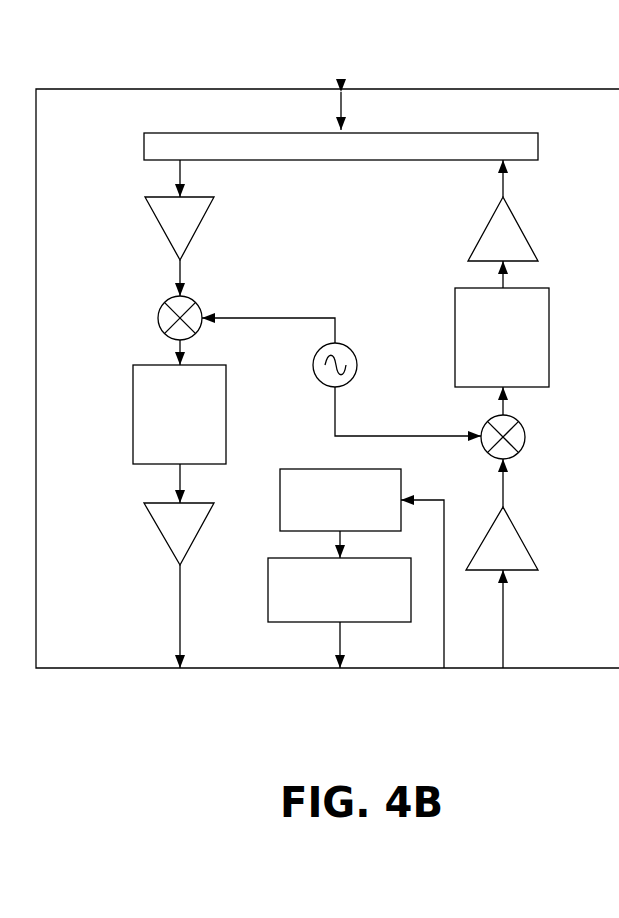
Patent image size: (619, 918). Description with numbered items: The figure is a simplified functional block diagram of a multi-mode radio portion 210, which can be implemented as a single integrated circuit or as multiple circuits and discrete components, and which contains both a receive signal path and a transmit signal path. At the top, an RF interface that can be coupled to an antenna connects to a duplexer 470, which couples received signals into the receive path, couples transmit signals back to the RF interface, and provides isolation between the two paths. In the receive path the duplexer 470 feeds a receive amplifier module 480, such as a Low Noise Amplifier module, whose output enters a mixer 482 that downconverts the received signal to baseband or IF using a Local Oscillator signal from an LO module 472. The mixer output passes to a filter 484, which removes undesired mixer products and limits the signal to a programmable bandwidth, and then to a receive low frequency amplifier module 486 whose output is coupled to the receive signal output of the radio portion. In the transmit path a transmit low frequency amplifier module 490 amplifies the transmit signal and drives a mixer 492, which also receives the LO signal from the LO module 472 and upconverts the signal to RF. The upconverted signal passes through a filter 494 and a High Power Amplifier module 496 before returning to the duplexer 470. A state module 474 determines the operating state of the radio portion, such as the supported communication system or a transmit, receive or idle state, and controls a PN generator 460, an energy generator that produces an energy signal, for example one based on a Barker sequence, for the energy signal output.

The multi-mode radio portion 210 is at (492, 89).
The duplexer 470 is at (160, 131).
The receive amplifier module 480 is at (165, 237).
The mixer 482 is at (156, 328).
The filter 484 is at (130, 423).
The receive low frequency amplifier module 486 is at (170, 560).
The LO module 472 is at (393, 358).
The High Power Amplifier module 496 is at (530, 242).
The filter 494 is at (557, 306).
The mixer 492 is at (520, 455).
The transmit low frequency amplifier module 490 is at (520, 572).
The state module 474 is at (280, 485).
The PN generator 460 is at (268, 601).